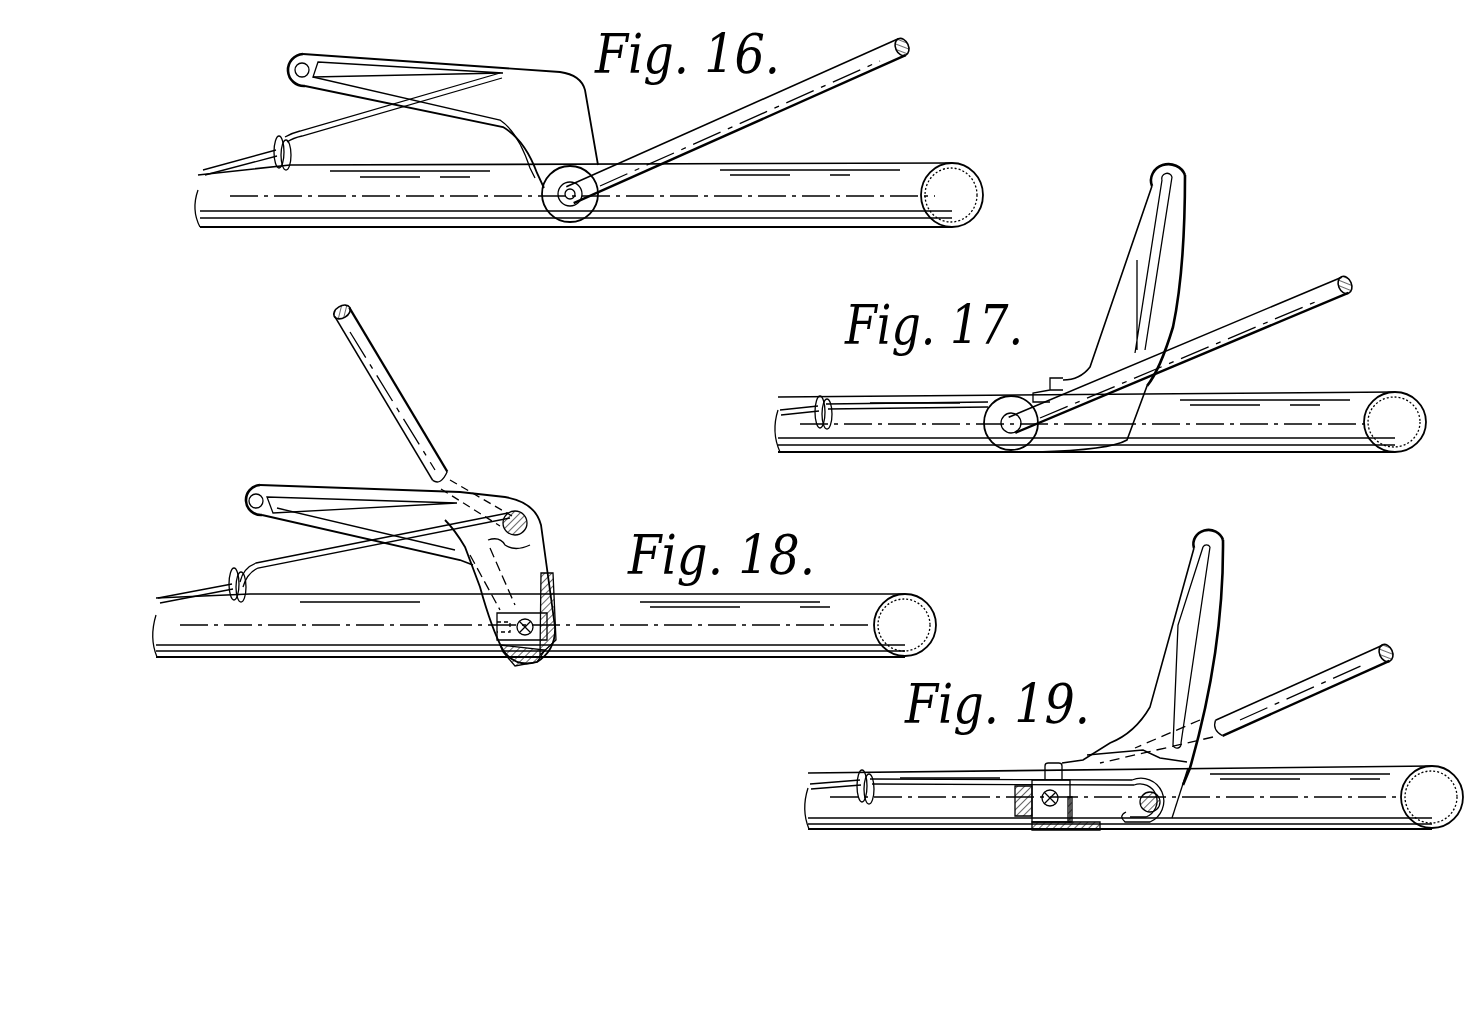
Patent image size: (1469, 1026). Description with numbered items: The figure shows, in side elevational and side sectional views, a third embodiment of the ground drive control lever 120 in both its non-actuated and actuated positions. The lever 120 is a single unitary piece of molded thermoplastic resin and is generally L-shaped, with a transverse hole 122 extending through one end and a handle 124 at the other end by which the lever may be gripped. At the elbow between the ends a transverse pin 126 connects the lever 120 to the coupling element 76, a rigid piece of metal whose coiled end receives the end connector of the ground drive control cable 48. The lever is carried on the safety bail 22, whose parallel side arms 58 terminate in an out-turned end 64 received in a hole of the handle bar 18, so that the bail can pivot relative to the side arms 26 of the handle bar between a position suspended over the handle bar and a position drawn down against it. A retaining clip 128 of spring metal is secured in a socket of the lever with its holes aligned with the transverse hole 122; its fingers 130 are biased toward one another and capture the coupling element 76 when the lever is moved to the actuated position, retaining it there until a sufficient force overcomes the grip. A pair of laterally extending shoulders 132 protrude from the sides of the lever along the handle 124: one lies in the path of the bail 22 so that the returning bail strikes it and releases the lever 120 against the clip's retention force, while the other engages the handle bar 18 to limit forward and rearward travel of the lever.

In FIG. 16, the handle bar 18 is at (983, 159).
In FIG. 17, the handle bar 18 is at (1418, 455).
In FIG. 18, the handle bar 18 is at (931, 589).
In FIG. 19, the handle bar 18 is at (1443, 761).
In FIG. 16, the safety bail 22 is at (792, 115).
In FIG. 17, the safety bail 22 is at (1217, 345).
In FIG. 18, the safety bail 22 is at (421, 414).
In FIG. 19, the safety bail 22 is at (1276, 695).
In FIG. 16, the side arms 26 is at (720, 200).
In FIG. 17, the side arms 26 is at (1242, 435).
In FIG. 18, the side arms 26 is at (722, 632).
In FIG. 19, the side arms 26 is at (1380, 785).
In FIG. 16, the cable 48 is at (248, 165).
In FIG. 17, the cable 48 is at (778, 400).
In FIG. 18, the cable 48 is at (198, 594).
In FIG. 19, the cable 48 is at (822, 780).
In FIG. 16, the side arms 58 is at (800, 98).
In FIG. 17, the side arms 58 is at (1274, 322).
In FIG. 18, the side arms 58 is at (378, 352).
In FIG. 19, the side arms 58 is at (1316, 688).
In FIG. 18, the out-turned end 64 is at (528, 645).
In FIG. 19, the out-turned end 64 is at (1044, 790).
In FIG. 16, the coupling element 76 is at (377, 130).
In FIG. 17, the coupling element 76 is at (957, 400).
In FIG. 18, the coupling element 76 is at (331, 556).
In FIG. 19, the coupling element 76 is at (942, 773).
In FIG. 16, the ground drive control lever 120 is at (430, 116).
In FIG. 17, the ground drive control lever 120 is at (1129, 308).
In FIG. 18, the ground drive control lever 120 is at (413, 579).
In FIG. 19, the ground drive control lever 120 is at (1144, 701).
In FIG. 18, the transverse hole 122 is at (552, 618).
In FIG. 19, the transverse hole 122 is at (1028, 815).
In FIG. 16, the handle 124 is at (313, 70).
In FIG. 17, the handle 124 is at (1162, 230).
In FIG. 18, the handle 124 is at (282, 500).
In FIG. 19, the handle 124 is at (1200, 590).
In FIG. 18, the transverse pin 126 is at (535, 522).
In FIG. 19, the transverse pin 126 is at (1152, 815).
In FIG. 18, the retaining clip 128 is at (559, 608).
In FIG. 19, the retaining clip 128 is at (1068, 832).
In FIG. 18, the fingers 130 is at (500, 622).
In FIG. 19, the fingers 130 is at (1054, 763).
In FIG. 16, the shoulders 132 is at (430, 132).
In FIG. 17, the shoulders 132 is at (1060, 383).